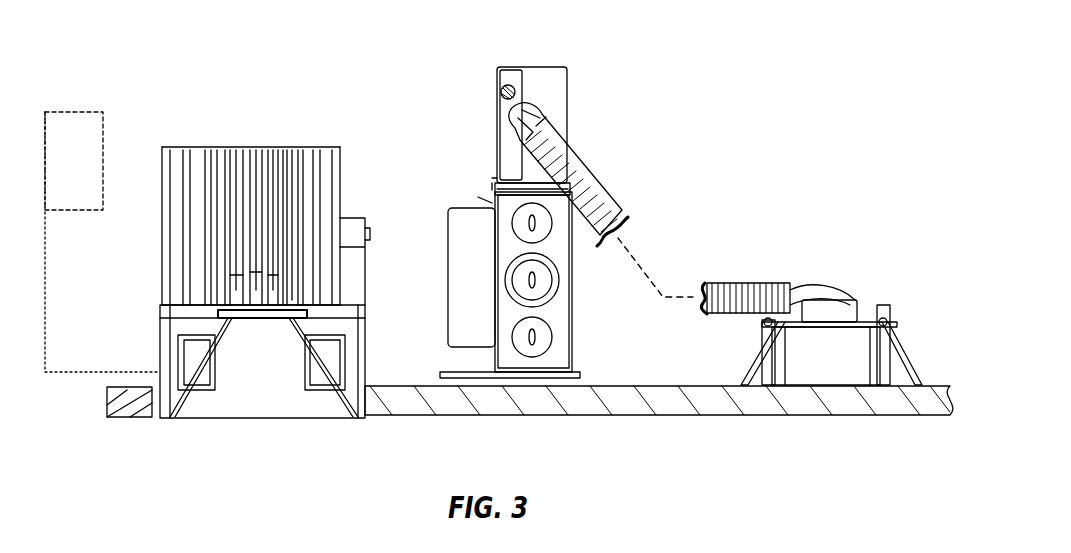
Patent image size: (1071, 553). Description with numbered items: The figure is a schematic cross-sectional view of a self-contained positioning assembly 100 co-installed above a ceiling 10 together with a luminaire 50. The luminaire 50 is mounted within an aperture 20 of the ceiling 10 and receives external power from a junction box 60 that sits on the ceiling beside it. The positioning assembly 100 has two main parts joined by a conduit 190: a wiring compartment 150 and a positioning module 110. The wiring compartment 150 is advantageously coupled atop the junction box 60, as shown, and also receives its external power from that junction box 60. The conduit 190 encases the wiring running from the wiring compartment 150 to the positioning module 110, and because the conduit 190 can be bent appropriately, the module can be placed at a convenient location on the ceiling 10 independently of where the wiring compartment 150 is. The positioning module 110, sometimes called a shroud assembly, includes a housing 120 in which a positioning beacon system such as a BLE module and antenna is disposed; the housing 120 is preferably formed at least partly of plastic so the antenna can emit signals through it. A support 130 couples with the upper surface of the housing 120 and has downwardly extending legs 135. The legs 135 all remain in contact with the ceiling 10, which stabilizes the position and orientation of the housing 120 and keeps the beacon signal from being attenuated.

The positioning assembly 100 is at (818, 78).
The ceiling 10 is at (130, 405).
The aperture 20 is at (266, 436).
The luminaire 50 is at (262, 150).
The junction box 60 is at (555, 320).
The positioning module 110 is at (852, 245).
The housing 120 is at (825, 365).
The support 130 is at (863, 322).
The legs 135 is at (745, 378).
The wiring compartment 150 is at (557, 89).
The conduit 190 is at (605, 196).